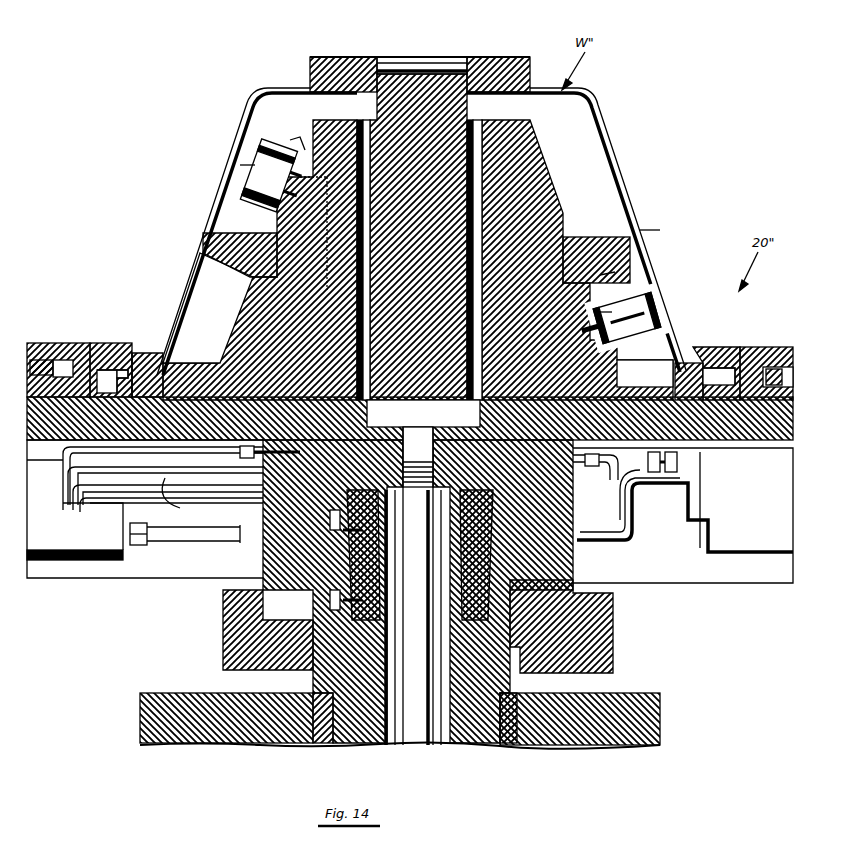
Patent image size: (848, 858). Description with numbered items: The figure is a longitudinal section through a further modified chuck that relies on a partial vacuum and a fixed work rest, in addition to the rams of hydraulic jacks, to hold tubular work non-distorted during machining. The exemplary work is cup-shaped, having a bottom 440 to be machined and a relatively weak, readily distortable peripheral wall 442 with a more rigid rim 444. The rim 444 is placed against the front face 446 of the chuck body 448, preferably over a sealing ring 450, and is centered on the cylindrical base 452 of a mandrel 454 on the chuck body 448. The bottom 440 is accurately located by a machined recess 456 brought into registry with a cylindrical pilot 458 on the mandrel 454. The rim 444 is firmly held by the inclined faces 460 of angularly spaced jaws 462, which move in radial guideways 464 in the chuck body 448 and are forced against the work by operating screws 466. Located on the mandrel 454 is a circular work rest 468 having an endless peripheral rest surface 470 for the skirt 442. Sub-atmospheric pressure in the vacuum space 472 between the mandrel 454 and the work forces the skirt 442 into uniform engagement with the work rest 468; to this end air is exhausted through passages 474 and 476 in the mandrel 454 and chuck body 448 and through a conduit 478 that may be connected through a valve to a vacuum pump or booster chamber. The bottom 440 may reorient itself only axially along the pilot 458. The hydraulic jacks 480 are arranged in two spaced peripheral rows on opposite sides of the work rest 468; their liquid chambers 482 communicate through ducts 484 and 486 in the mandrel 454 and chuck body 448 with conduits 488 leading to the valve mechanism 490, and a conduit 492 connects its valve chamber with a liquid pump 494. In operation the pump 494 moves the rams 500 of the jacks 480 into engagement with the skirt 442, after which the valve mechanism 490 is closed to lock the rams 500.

The bottom 440 is at (498, 64).
The peripheral wall 442 is at (620, 180).
The rim 444 is at (690, 363).
The front face 446 is at (135, 353).
The chuck body 448 is at (83, 400).
The sealing ring 450 is at (205, 340).
The cylindrical base 452 is at (660, 380).
The mandrel 454 is at (553, 183).
The machined recess 456 is at (420, 66).
The cylindrical pilot 458 is at (460, 70).
The inclined faces 460 is at (700, 360).
The jaws 462 is at (758, 348).
The radial guideways 464 is at (107, 370).
The operating screws 466 is at (786, 380).
The work rest 468 is at (585, 240).
The peripheral rest surface 470 is at (640, 232).
The vacuum space 472 is at (592, 182).
The passages 474 is at (352, 130).
The passage 476 is at (436, 421).
The conduit 478 is at (415, 736).
The hydraulic jacks 480 is at (262, 195).
The liquid chambers 482 is at (300, 140).
The ducts 484 is at (318, 231).
The ducts 486 is at (240, 452).
The conduits 488 is at (165, 492).
The valve mechanism 490 is at (73, 570).
The conduit 492 is at (236, 543).
The liquid pump 494 is at (746, 565).
The rams 500 is at (252, 161).